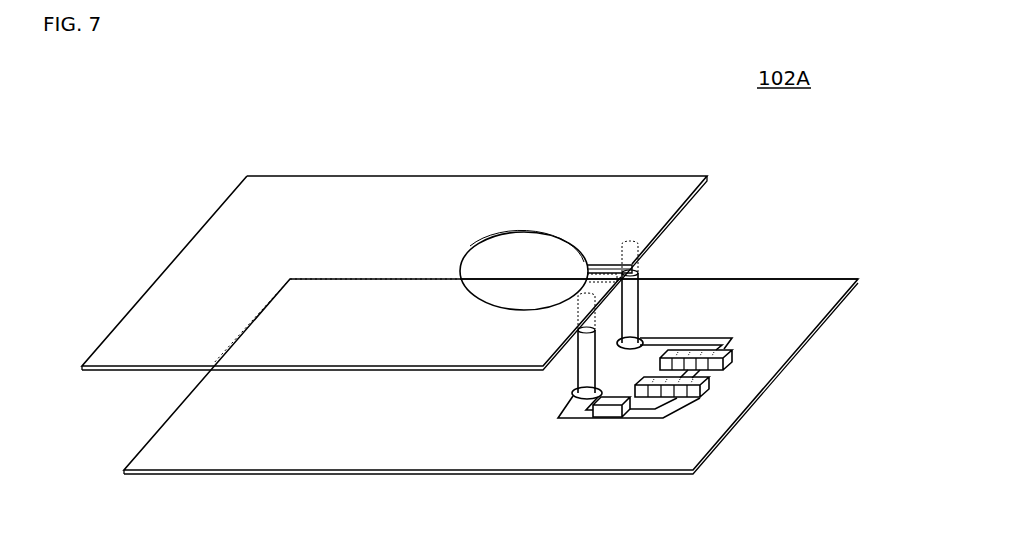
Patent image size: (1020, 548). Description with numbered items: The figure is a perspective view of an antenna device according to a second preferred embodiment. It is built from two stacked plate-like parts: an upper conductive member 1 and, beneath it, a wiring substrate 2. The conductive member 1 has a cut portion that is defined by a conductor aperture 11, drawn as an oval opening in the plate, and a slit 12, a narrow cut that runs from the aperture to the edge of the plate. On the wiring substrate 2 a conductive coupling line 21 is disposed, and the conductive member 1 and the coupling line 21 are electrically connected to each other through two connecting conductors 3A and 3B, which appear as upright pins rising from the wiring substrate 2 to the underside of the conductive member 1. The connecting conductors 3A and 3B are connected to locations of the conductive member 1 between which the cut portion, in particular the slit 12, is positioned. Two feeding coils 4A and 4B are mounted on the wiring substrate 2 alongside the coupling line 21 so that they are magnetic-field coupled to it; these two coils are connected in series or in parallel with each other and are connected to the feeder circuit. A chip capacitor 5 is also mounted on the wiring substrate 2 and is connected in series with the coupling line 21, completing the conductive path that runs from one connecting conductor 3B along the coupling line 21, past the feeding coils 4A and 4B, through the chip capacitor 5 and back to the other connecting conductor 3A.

The conductive member 1 is at (226, 219).
The wiring substrate 2 is at (812, 291).
The conductor aperture 11 is at (533, 259).
The slit 12 is at (608, 272).
The connecting conductor 3A is at (585, 372).
The connecting conductor 3B is at (632, 296).
The coupling line 21 is at (683, 340).
The feeding coil 4A is at (712, 389).
The feeding coil 4B is at (737, 362).
The chip capacitor 5 is at (609, 413).